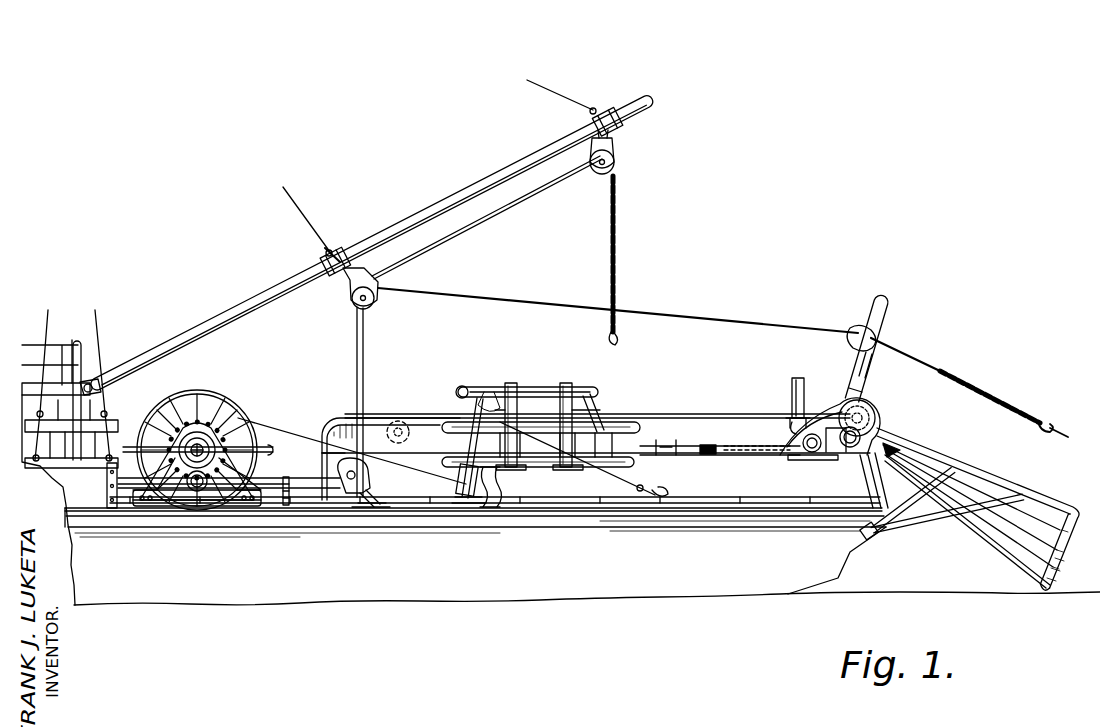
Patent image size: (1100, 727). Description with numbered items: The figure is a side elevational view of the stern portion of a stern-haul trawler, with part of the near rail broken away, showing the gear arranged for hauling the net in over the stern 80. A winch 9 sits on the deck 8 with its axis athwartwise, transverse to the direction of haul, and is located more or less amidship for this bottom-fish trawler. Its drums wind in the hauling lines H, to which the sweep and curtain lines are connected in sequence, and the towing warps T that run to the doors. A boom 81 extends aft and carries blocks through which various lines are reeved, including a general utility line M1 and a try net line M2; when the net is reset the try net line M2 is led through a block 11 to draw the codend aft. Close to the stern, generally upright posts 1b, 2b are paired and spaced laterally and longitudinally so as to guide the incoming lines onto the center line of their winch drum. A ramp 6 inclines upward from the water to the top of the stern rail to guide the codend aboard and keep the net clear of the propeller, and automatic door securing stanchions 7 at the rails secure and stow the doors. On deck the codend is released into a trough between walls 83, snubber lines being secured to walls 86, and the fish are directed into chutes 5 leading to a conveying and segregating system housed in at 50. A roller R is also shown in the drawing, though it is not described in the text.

The winch 9 is at (172, 398).
The boom 81 is at (272, 287).
The general utility line M1 is at (486, 208).
The try net line M2 is at (797, 328).
The block 11 is at (853, 346).
The upright post 1b is at (866, 386).
The upright post 2b is at (790, 378).
The walls 86 is at (808, 420).
The walls 83 is at (688, 444).
The chutes 5 is at (742, 456).
The stern 80 is at (877, 484).
The ramp 6 is at (1005, 557).
The automatic door securing stanchions 7 is at (590, 390).
The roller R is at (405, 428).
The hauling lines H is at (310, 422).
The deck 8 is at (303, 508).
The housing 50 is at (272, 500).
The towing warps T is at (410, 470).